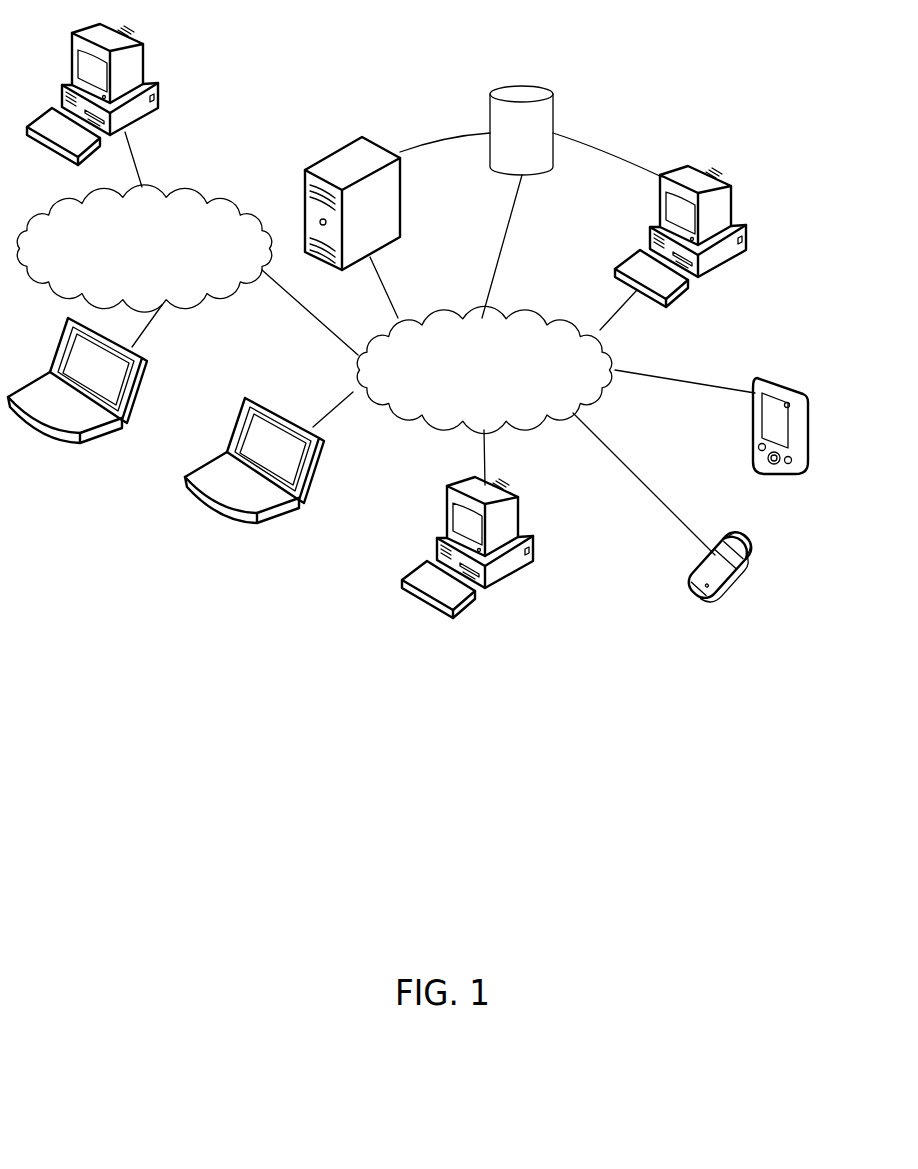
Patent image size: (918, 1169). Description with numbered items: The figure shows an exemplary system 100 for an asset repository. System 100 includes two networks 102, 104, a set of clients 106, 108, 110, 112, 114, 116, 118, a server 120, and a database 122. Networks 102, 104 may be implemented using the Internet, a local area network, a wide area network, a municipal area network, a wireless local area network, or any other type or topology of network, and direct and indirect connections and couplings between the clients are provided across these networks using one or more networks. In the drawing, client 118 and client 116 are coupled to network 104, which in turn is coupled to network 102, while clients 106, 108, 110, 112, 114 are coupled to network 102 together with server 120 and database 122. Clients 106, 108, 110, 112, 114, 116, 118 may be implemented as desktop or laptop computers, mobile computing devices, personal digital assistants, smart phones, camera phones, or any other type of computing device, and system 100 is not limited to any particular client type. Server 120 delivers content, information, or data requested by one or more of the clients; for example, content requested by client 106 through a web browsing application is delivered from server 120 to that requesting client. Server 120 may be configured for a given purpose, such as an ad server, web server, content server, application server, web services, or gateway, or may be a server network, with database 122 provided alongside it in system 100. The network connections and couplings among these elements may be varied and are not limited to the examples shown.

The system 100 is at (189, 767).
The network 102 is at (500, 406).
The network 104 is at (159, 282).
The client 106 is at (722, 193).
The client 108 is at (537, 545).
The client 110 is at (312, 486).
The client 112 is at (758, 548).
The client 114 is at (812, 430).
The client 116 is at (133, 398).
The client 118 is at (158, 78).
The server 120 is at (322, 163).
The database 122 is at (538, 141).